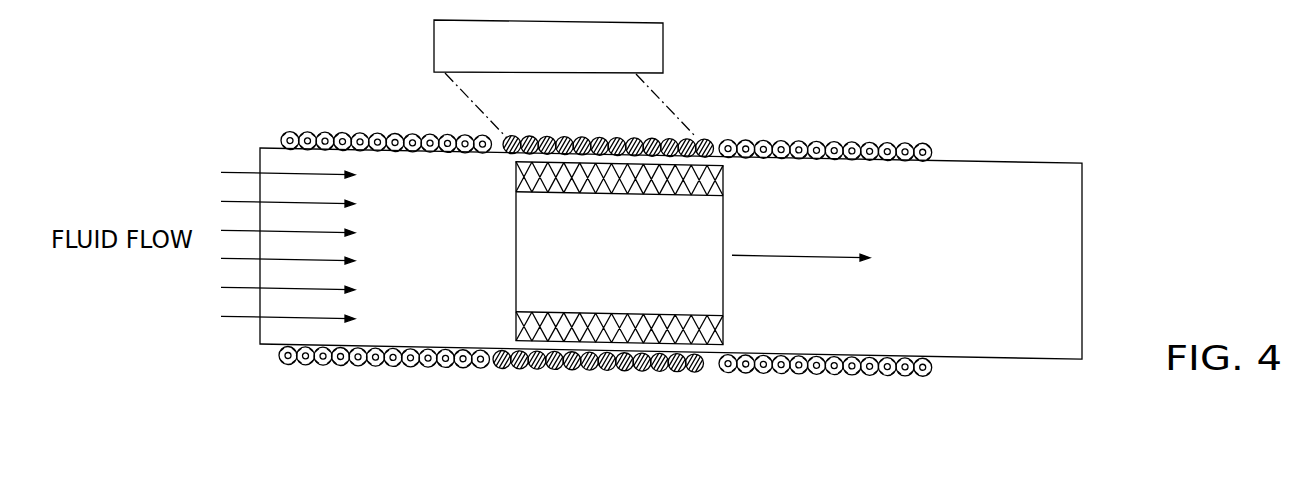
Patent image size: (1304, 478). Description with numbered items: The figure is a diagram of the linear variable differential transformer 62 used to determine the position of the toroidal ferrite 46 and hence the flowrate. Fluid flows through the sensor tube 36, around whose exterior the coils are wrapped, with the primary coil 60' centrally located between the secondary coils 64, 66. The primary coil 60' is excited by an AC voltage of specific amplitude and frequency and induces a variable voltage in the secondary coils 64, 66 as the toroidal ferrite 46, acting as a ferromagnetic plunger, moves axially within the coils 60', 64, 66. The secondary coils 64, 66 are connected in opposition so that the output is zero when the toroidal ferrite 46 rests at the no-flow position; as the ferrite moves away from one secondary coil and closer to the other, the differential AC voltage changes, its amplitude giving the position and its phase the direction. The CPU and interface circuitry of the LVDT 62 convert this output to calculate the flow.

The sensor tube 36 is at (268, 147).
The toroidal ferrite 46 is at (513, 332).
The primary coil 60' is at (603, 226).
The linear variable differential transformer 62 is at (663, 49).
The secondary coil 64 is at (362, 143).
The secondary coil 66 is at (797, 142).